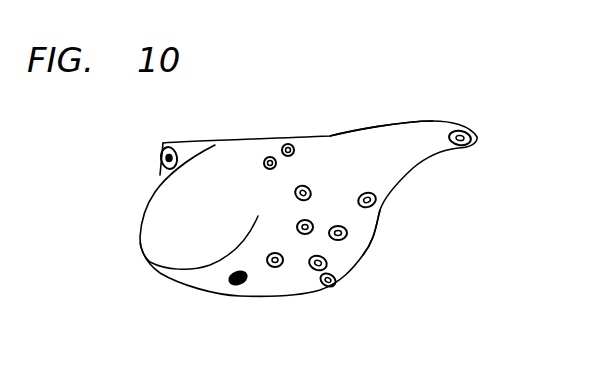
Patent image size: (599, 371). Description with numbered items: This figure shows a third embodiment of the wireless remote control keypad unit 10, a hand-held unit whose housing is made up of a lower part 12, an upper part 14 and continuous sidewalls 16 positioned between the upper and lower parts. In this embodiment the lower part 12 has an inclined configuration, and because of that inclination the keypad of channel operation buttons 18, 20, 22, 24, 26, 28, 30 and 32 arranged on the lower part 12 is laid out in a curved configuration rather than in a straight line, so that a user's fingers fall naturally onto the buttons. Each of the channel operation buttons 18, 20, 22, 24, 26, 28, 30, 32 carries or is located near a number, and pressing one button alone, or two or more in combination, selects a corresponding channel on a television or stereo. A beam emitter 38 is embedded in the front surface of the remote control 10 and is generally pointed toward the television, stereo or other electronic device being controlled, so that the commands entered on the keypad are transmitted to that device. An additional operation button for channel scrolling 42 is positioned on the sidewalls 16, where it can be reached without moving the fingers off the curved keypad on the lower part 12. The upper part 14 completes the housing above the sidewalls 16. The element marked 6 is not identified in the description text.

The corner eyelet 6 is at (160, 158).
The wireless remote control keypad unit 10 is at (448, 92).
The lower part 12 is at (362, 250).
The upper part 14 is at (402, 121).
The continuous sidewalls 16 is at (214, 216).
The channel operation button 18 is at (225, 287).
The channel operation button 20 is at (323, 292).
The channel operation button 22 is at (272, 268).
The channel operation button 24 is at (323, 268).
The channel operation button 26 is at (310, 232).
The channel operation button 28 is at (347, 233).
The channel operation button 30 is at (306, 186).
The channel operation button 32 is at (376, 201).
The beam emitter 38 is at (470, 148).
The channel scrolling button 42 is at (269, 156).